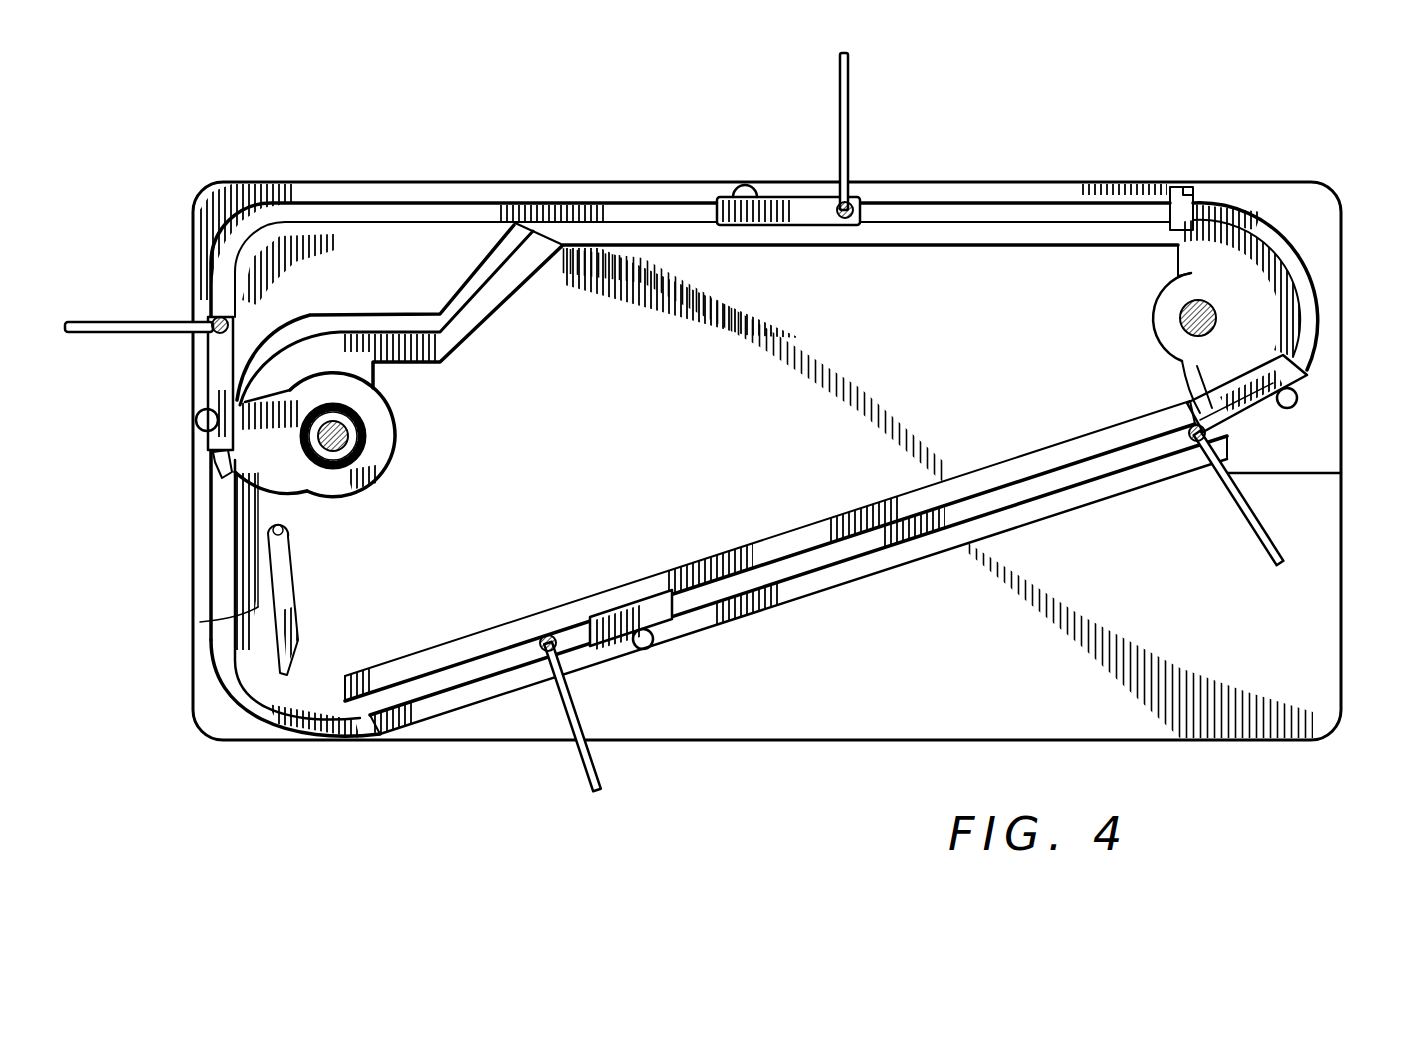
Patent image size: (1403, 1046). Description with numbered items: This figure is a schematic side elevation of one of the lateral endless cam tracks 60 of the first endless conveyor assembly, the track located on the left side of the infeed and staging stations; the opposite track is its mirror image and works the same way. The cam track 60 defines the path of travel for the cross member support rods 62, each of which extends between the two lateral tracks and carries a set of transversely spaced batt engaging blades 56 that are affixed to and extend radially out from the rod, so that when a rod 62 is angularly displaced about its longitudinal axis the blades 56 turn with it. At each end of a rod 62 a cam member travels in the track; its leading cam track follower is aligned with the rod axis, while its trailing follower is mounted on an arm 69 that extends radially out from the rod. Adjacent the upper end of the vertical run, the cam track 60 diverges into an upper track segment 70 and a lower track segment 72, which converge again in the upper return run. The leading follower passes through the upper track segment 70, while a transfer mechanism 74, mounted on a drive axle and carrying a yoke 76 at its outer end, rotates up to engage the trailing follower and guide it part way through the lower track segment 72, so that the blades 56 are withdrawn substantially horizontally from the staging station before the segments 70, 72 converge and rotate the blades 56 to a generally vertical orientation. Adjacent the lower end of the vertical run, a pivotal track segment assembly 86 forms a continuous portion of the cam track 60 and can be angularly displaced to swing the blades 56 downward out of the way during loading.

The batt engaging blades 56 is at (850, 112).
The lateral endless cam track 60 is at (808, 569).
The cross member support rod 62 is at (840, 204).
The arm 69 is at (786, 205).
The upper track segment 70 is at (367, 209).
The lower track segment 72 is at (403, 333).
The transfer mechanism 74 is at (392, 466).
The yoke 76 is at (220, 472).
The pivotal track segment assembly 86 is at (188, 655).